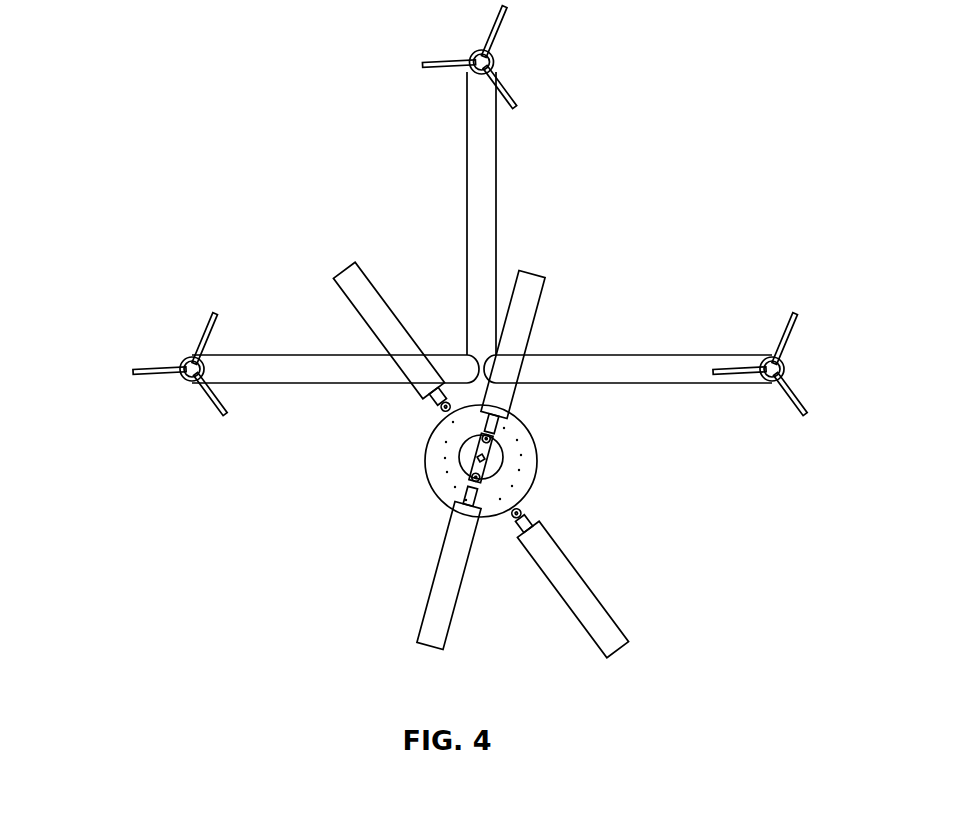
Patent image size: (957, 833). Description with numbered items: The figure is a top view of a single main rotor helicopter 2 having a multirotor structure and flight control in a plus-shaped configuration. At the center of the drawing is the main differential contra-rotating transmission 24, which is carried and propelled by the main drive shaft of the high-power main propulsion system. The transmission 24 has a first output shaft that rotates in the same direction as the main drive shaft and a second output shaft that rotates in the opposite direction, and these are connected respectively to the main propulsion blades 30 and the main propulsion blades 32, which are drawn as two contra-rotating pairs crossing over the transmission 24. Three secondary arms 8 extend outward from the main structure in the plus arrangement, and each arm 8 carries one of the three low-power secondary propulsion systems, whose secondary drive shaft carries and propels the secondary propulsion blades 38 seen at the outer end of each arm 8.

The single main rotor helicopter 2 is at (501, 348).
The secondary arm 8 is at (486, 161).
The main differential contra-rotating transmission 24 is at (403, 474).
The main propulsion blades 30 is at (532, 282).
The main propulsion blades 32 is at (350, 278).
The secondary propulsion blades 38 is at (512, 95).